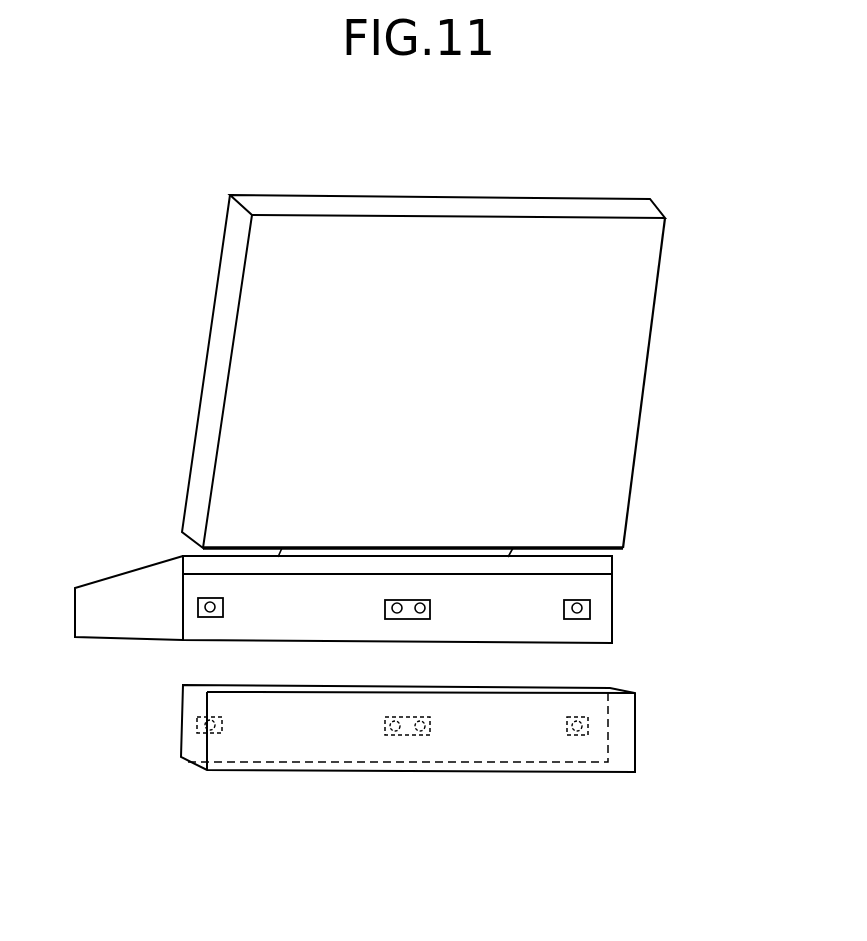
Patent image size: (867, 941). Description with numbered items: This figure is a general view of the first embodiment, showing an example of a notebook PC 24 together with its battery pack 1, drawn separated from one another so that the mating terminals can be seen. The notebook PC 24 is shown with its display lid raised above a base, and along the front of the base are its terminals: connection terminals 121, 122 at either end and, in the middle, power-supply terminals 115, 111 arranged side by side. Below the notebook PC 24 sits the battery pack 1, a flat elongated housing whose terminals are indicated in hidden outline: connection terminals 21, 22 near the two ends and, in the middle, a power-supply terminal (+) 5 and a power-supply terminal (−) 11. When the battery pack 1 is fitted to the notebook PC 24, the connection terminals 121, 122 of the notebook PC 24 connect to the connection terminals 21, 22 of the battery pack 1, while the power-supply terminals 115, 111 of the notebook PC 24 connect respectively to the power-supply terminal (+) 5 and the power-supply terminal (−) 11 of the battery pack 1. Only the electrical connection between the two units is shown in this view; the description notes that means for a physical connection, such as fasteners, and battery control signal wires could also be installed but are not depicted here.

The battery pack 1 is at (635, 727).
The power-supply terminal (+) 5 is at (395, 735).
The power-supply terminal (−) 11 is at (420, 735).
The connection terminal 21 is at (577, 735).
The connection terminal 22 is at (195, 727).
The notebook PC 24 is at (623, 389).
The power-supply terminal 111 is at (423, 600).
The power-supply terminal 115 is at (398, 600).
The connection terminal 121 is at (578, 600).
The connection terminal 122 is at (217, 598).